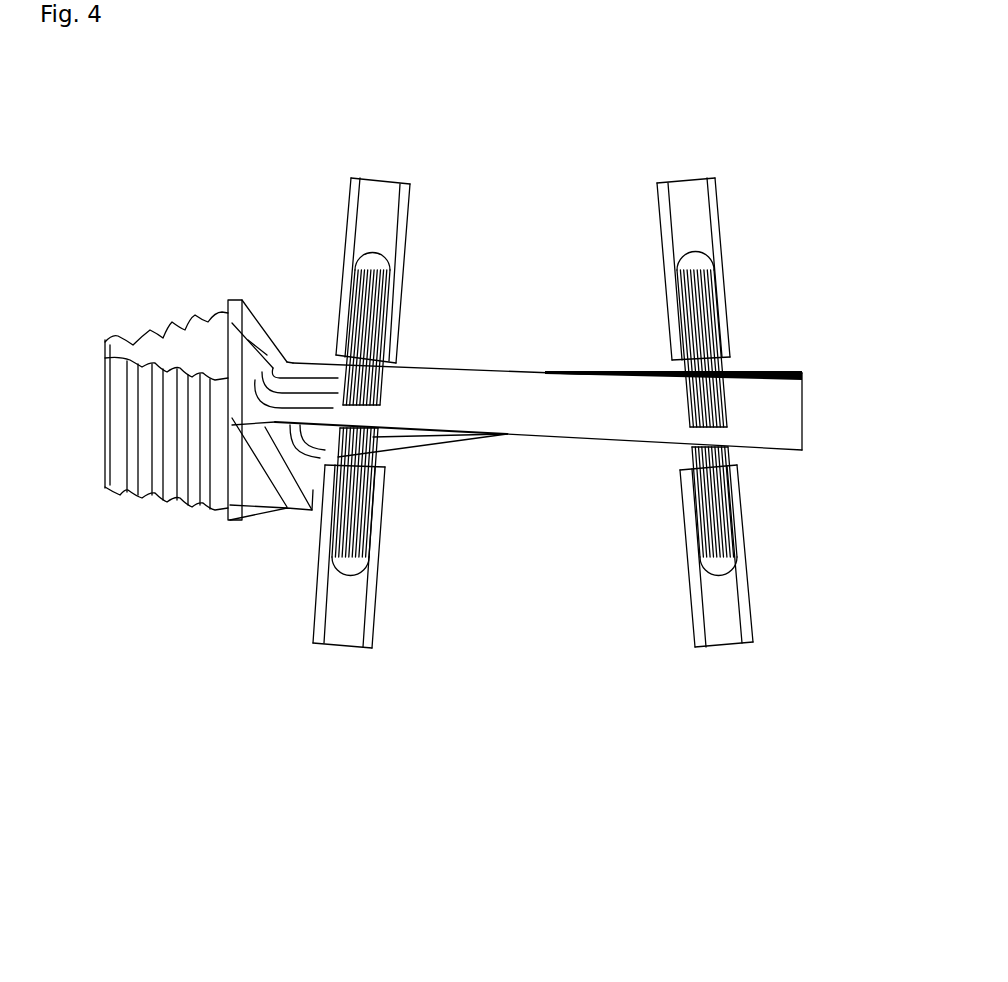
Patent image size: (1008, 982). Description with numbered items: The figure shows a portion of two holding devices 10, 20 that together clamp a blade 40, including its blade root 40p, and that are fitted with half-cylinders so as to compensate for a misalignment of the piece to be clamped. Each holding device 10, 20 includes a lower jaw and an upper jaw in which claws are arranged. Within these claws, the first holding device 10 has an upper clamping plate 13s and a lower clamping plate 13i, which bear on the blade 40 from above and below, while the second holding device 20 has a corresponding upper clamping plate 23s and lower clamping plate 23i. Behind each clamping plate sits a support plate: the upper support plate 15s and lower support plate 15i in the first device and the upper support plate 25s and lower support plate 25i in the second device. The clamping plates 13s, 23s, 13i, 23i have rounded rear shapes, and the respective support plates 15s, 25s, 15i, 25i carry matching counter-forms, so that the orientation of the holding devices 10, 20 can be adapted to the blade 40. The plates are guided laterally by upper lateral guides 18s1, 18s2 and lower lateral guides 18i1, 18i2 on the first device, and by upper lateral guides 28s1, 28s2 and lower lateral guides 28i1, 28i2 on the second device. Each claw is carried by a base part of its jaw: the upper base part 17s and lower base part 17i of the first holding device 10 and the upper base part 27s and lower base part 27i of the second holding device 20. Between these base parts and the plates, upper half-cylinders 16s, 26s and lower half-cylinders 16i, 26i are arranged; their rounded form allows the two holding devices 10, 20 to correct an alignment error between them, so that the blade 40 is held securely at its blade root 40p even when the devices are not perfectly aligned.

The holding device 10 is at (343, 425).
The holding device 20 is at (679, 414).
The blade 40 is at (572, 445).
The blade root 40p is at (221, 348).
The upper clamping plate 13s is at (449, 361).
The upper support plate 15s is at (455, 332).
The upper half-cylinder 16s is at (459, 249).
The upper base part 17s is at (452, 232).
The upper lateral guide 18s1 is at (428, 229).
The upper lateral guide 18s2 is at (479, 249).
The lower clamping plate 13i is at (247, 507).
The lower support plate 15i is at (250, 526).
The lower half-cylinder 16i is at (251, 611).
The lower base part 17i is at (312, 644).
The lower lateral guide 18i1 is at (242, 625).
The lower lateral guide 18i2 is at (419, 633).
The upper clamping plate 23s is at (780, 373).
The upper support plate 25s is at (779, 348).
The upper half-cylinder 26s is at (774, 251).
The upper base part 27s is at (765, 233).
The upper lateral guide 28s1 is at (741, 233).
The upper lateral guide 28s2 is at (790, 248).
The lower clamping plate 23i is at (605, 515).
The lower support plate 25i is at (614, 534).
The lower half-cylinder 26i is at (619, 609).
The lower base part 27i is at (695, 628).
The lower lateral guide 28i1 is at (619, 622).
The lower lateral guide 28i2 is at (792, 628).